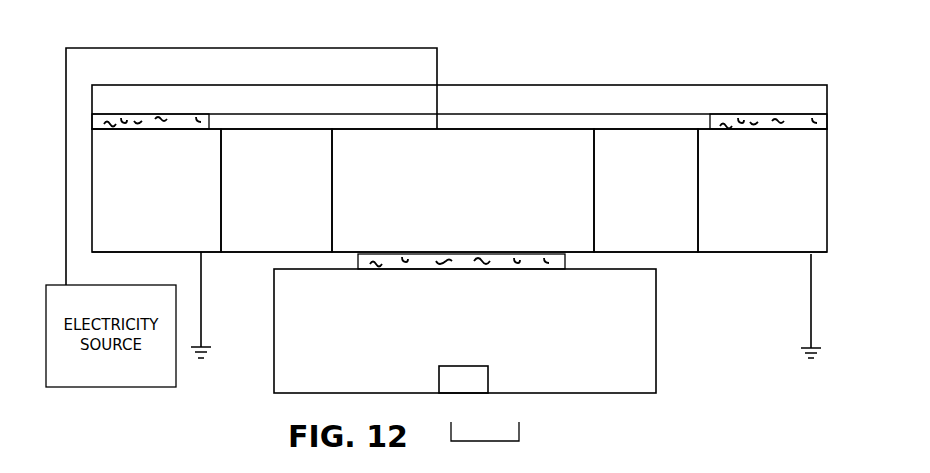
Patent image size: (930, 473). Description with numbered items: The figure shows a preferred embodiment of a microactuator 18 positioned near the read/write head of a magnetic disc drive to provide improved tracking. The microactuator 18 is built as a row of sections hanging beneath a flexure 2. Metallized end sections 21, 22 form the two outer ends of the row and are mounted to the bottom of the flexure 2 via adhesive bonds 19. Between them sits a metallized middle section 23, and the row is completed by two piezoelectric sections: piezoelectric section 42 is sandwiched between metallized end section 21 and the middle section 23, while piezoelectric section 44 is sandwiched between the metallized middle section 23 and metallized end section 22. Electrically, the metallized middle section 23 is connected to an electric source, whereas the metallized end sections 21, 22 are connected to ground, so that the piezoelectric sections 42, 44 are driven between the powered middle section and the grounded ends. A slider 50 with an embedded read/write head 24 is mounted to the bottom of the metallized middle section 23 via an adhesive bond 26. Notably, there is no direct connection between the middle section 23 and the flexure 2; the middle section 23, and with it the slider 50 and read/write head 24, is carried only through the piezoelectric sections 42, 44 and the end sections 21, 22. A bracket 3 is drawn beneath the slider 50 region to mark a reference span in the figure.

The flexure 2 is at (773, 85).
The adhesive bond 19 is at (212, 116).
The microactuator 18 is at (486, 183).
The metallized end section 21 is at (98, 221).
The piezoelectric section 42 is at (280, 145).
The metallized middle section 23 is at (510, 143).
The piezoelectric section 44 is at (633, 140).
The metallized end section 22 is at (722, 245).
The adhesive bond 26 is at (358, 262).
The slider 50 is at (655, 361).
The read/write head 24 is at (486, 382).
The bracket region 3 is at (466, 441).